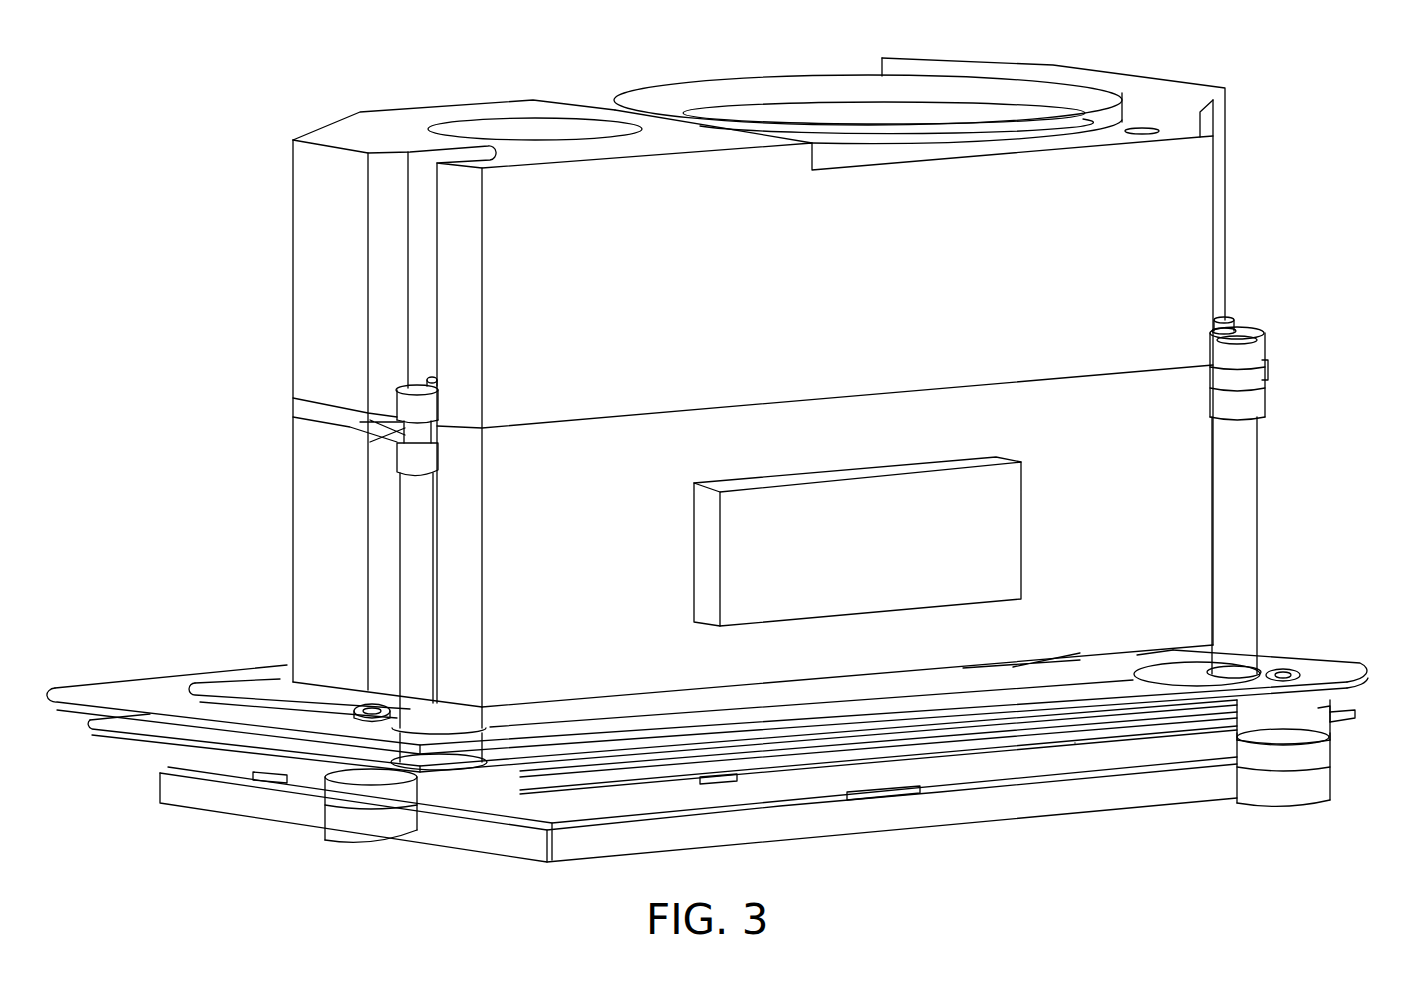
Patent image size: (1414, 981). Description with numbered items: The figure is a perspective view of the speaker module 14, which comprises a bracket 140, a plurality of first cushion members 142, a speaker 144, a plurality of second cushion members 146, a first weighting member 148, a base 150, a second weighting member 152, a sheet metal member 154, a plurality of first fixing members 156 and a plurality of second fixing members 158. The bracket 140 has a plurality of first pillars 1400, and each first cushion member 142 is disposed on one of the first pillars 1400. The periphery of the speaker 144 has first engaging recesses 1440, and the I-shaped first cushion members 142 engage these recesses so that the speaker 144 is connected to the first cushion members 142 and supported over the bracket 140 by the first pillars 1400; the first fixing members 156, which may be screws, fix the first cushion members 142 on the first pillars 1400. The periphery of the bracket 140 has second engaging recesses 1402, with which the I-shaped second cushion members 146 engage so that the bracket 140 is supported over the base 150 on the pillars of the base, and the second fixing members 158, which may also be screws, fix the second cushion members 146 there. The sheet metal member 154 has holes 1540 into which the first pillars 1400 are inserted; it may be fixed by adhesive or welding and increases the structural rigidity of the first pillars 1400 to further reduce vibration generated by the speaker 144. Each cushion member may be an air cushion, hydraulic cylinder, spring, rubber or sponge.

The speaker module 14 is at (222, 107).
The bracket 140 is at (1075, 743).
The first pillar 1400 is at (1257, 463).
The second engaging recess 1402 is at (1340, 727).
The first cushion member 142 is at (1265, 347).
The speaker 144 is at (447, 100).
The first engaging recess 1440 is at (370, 422).
The second cushion member 146 is at (1308, 758).
The first weighting member 148 is at (707, 535).
The base 150 is at (592, 860).
The second weighting member 152 is at (992, 772).
The sheet metal member 154 is at (120, 678).
The hole 1540 is at (457, 733).
The first fixing member 156 is at (1237, 322).
The second fixing member 158 is at (1283, 668).